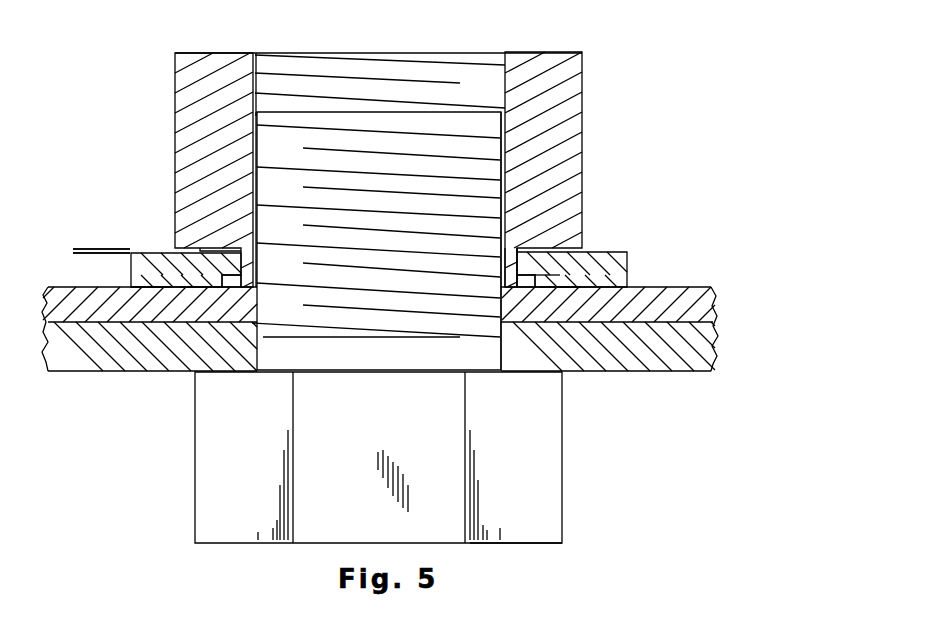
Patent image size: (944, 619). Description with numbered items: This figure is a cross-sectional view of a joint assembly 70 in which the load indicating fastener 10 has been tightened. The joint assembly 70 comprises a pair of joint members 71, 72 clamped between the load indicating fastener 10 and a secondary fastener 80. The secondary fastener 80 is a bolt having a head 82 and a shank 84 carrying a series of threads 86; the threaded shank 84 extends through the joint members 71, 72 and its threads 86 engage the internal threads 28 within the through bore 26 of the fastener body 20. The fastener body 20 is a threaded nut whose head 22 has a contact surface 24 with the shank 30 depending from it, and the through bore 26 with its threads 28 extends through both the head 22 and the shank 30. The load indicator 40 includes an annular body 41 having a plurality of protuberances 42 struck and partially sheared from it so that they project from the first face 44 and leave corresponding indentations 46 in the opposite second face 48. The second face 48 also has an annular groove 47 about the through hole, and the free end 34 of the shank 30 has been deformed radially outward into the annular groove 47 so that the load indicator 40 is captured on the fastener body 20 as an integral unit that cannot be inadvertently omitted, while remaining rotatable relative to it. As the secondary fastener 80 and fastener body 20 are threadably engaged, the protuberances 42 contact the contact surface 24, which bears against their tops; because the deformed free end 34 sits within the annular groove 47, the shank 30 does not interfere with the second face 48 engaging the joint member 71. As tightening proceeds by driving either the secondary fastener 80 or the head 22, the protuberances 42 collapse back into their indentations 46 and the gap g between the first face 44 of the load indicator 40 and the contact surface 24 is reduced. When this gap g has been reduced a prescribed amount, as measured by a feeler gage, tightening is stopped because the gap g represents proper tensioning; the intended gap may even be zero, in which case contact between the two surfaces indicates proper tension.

The load indicating fastener 10 is at (669, 117).
The fastener body 20 is at (584, 73).
The head 22 is at (582, 115).
The contact surface 24 is at (582, 196).
The through bore 26 is at (433, 70).
The internal threads 28 is at (300, 70).
The shank 30 is at (242, 282).
The free end 34 is at (535, 292).
The load indicator 40 is at (658, 242).
The annular body 41 is at (627, 270).
The protuberances 42 is at (180, 252).
The first face 44 is at (87, 247).
The indentations 46 is at (198, 288).
The annular groove 47 is at (549, 282).
The second face 48 is at (150, 290).
The joint assembly 70 is at (772, 243).
The joint member 71 is at (716, 305).
The joint member 72 is at (685, 372).
The secondary fastener 80 is at (566, 457).
The head 82 is at (508, 545).
The shank 84 is at (275, 116).
The threads 86 is at (364, 318).
The gap g is at (87, 255).